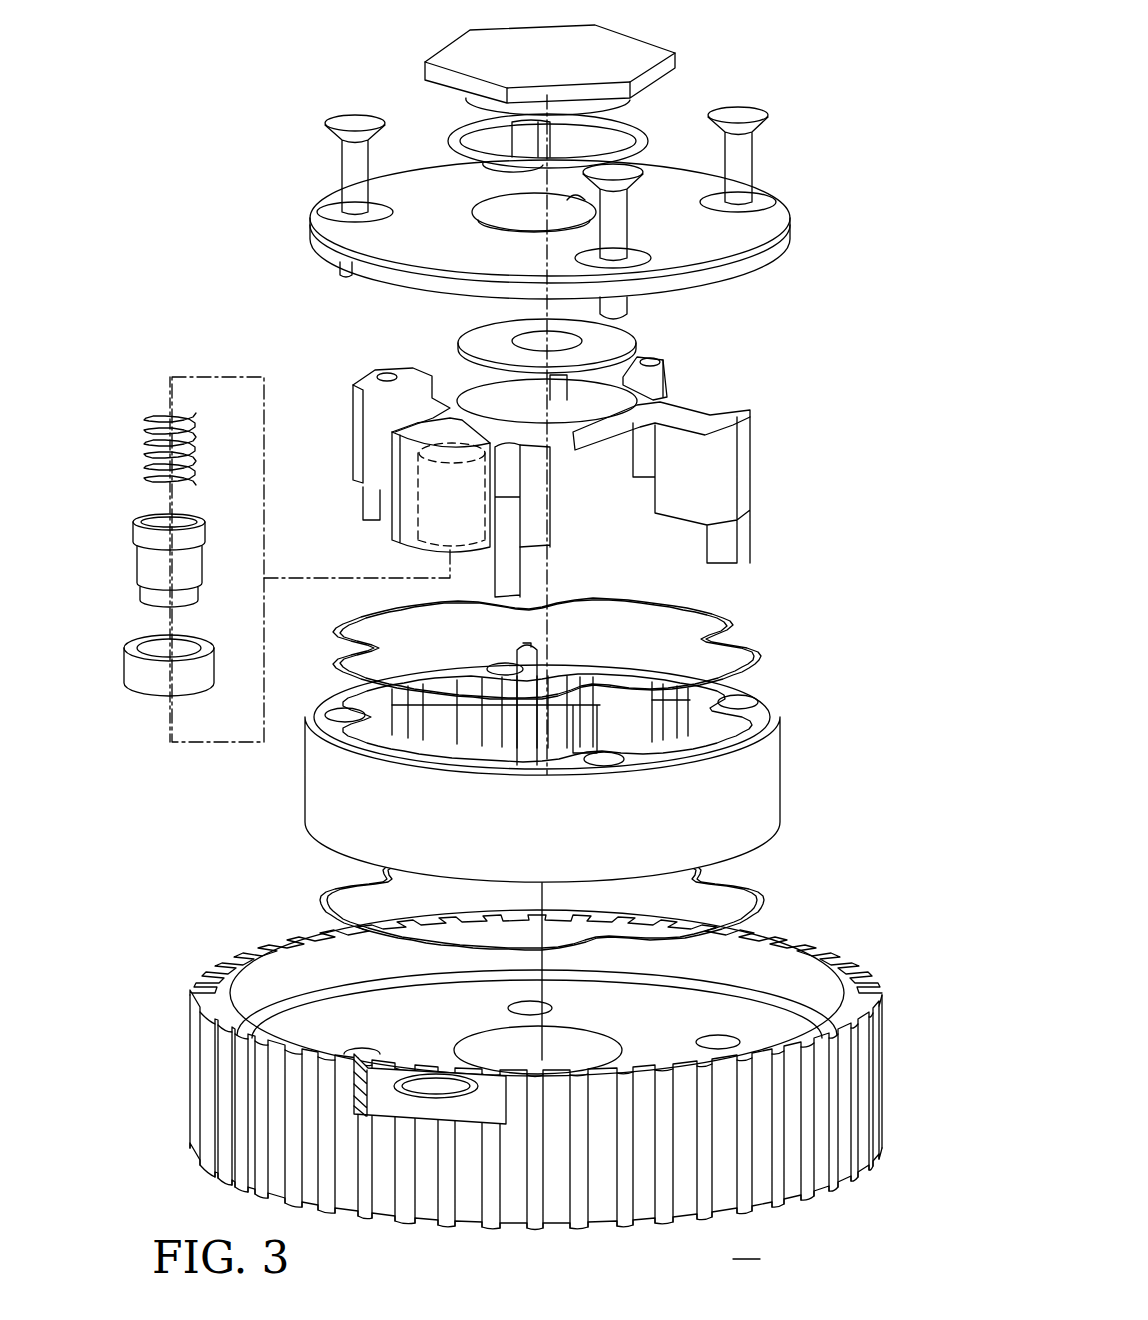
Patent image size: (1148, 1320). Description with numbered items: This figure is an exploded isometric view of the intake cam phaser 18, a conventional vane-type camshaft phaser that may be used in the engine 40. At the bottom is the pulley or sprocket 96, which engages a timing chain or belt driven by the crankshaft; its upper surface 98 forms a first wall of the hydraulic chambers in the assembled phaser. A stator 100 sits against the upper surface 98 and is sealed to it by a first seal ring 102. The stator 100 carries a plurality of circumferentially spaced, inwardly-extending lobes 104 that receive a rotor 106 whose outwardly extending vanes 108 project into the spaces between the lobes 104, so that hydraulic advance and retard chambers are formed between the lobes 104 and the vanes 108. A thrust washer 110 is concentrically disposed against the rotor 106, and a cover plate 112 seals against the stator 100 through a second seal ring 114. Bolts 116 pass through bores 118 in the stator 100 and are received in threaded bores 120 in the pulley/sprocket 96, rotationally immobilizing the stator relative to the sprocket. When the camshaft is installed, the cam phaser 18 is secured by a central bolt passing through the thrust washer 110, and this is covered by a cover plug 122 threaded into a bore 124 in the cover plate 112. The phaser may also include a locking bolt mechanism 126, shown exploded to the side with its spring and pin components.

The intake cam phaser 18 is at (824, 104).
The engine 40 is at (747, 1247).
The pulley or sprocket 96 is at (205, 985).
The upper surface 98 is at (690, 985).
The stator 100 is at (775, 745).
The first seal ring 102 is at (770, 870).
The inwardly-extending lobes 104 is at (560, 665).
The rotor 106 is at (771, 334).
The outwardly extending vanes 108 is at (405, 375).
The thrust washer 110 is at (620, 340).
The cover plate 112 is at (795, 235).
The second seal ring 114 is at (730, 620).
The bolts 116 is at (517, 138).
The bores 118 is at (505, 665).
The threaded bores 120 is at (520, 1005).
The cover plug 122 is at (625, 45).
The bore 124 is at (587, 197).
The locking bolt mechanism 126 is at (121, 497).